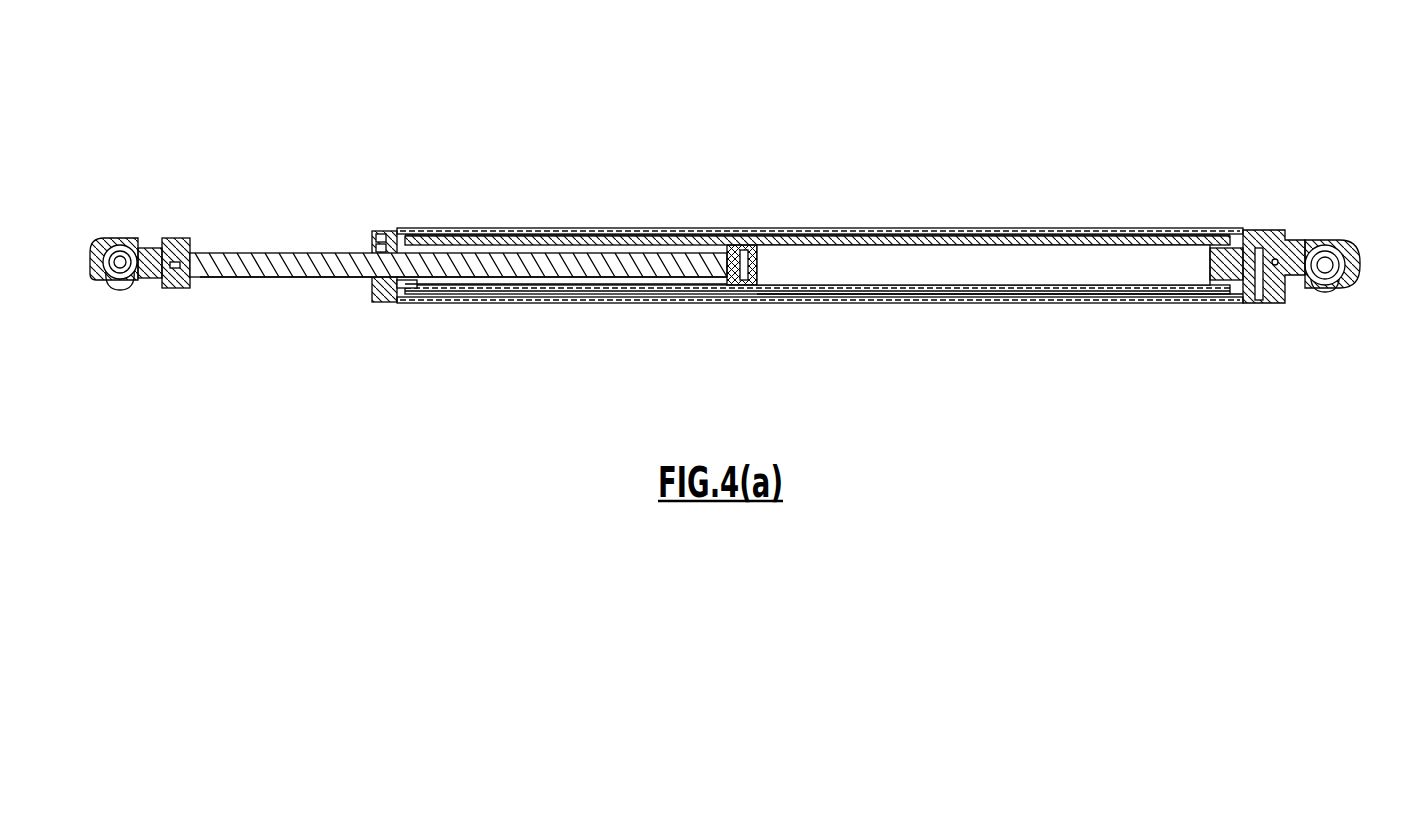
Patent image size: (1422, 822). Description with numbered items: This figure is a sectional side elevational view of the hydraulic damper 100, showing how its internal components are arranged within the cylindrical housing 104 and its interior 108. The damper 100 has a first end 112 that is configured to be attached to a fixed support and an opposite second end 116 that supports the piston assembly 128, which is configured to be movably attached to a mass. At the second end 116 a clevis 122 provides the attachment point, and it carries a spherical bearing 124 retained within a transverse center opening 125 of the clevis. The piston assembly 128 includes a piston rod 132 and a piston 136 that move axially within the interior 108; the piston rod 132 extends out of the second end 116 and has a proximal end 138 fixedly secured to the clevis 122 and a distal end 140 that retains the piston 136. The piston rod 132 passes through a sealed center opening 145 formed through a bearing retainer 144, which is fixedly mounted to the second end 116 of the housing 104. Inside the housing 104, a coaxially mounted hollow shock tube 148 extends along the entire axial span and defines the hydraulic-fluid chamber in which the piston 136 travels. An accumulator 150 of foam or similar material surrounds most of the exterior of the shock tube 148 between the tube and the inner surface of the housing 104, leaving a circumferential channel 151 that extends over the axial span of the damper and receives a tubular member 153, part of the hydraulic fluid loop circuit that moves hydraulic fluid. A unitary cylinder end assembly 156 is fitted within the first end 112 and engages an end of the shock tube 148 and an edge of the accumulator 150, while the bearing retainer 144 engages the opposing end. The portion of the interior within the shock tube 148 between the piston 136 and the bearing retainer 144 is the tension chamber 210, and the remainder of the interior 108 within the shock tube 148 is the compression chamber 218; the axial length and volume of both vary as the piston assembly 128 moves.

The damper 100 is at (592, 43).
The housing 104 is at (490, 228).
The interior 108 is at (567, 285).
The first end 112 is at (1235, 303).
The second end 116 is at (395, 302).
The clevis 122 is at (178, 238).
The spherical bearing 124 is at (120, 288).
The transverse center opening 125 is at (150, 246).
The piston assembly 128 is at (323, 283).
The piston rod 132 is at (240, 253).
The piston 136 is at (740, 246).
The proximal end 138 is at (178, 290).
The distal end 140 is at (745, 285).
The bearing retainer 144 is at (383, 229).
The sealed center opening 145 is at (374, 245).
The shock tube 148 is at (520, 236).
The accumulator 150 is at (438, 230).
The channel 151 is at (1115, 296).
The tubular member 153 is at (1012, 296).
The cylinder end assembly 156 is at (1268, 232).
The tension chamber 210 is at (640, 285).
The compression chamber 218 is at (910, 260).